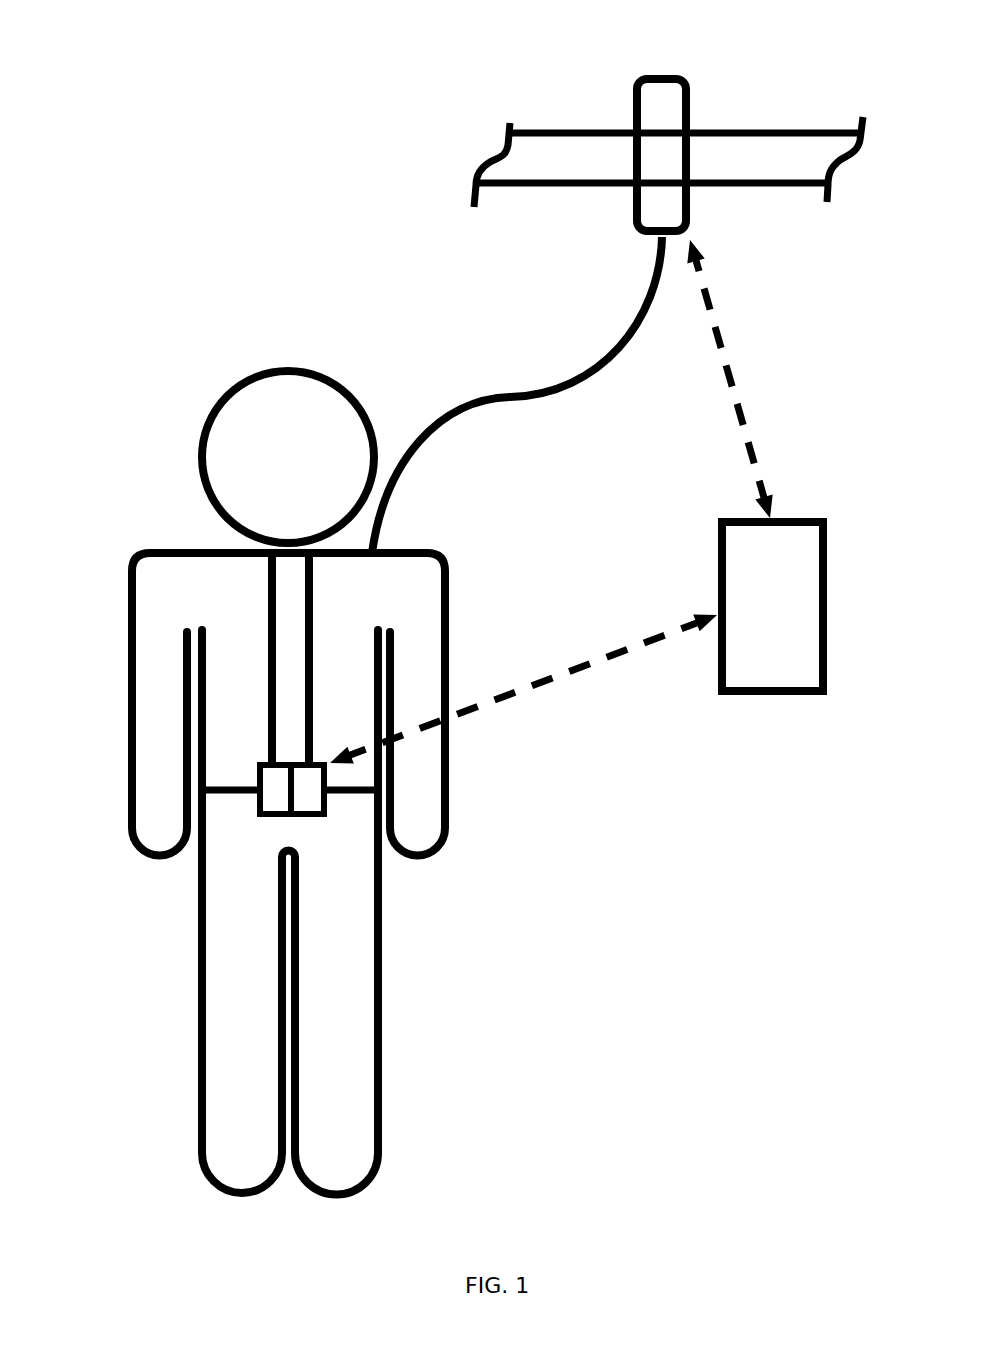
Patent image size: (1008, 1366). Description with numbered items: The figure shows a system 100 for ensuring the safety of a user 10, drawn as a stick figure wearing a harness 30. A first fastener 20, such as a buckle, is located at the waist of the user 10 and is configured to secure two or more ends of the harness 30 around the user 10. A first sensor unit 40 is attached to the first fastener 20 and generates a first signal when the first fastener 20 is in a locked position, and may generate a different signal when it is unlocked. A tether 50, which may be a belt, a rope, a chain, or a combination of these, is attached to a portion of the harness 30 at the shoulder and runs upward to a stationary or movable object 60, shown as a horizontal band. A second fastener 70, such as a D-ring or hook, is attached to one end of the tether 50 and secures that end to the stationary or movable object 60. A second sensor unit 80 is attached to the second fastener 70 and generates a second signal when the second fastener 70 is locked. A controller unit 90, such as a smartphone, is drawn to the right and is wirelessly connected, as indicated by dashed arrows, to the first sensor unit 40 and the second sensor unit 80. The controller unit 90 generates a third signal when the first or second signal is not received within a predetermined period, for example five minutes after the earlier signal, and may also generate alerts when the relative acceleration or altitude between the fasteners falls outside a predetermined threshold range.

The system 100 is at (256, 226).
The user 10 is at (232, 378).
The first fastener 20 is at (260, 817).
The harness 30 is at (278, 797).
The first sensor unit 40 is at (307, 790).
The tether 50 is at (497, 393).
The stationary or movable object 60 is at (785, 128).
The second fastener 70 is at (630, 113).
The second sensor unit 80 is at (657, 208).
The controller unit 90 is at (763, 643).